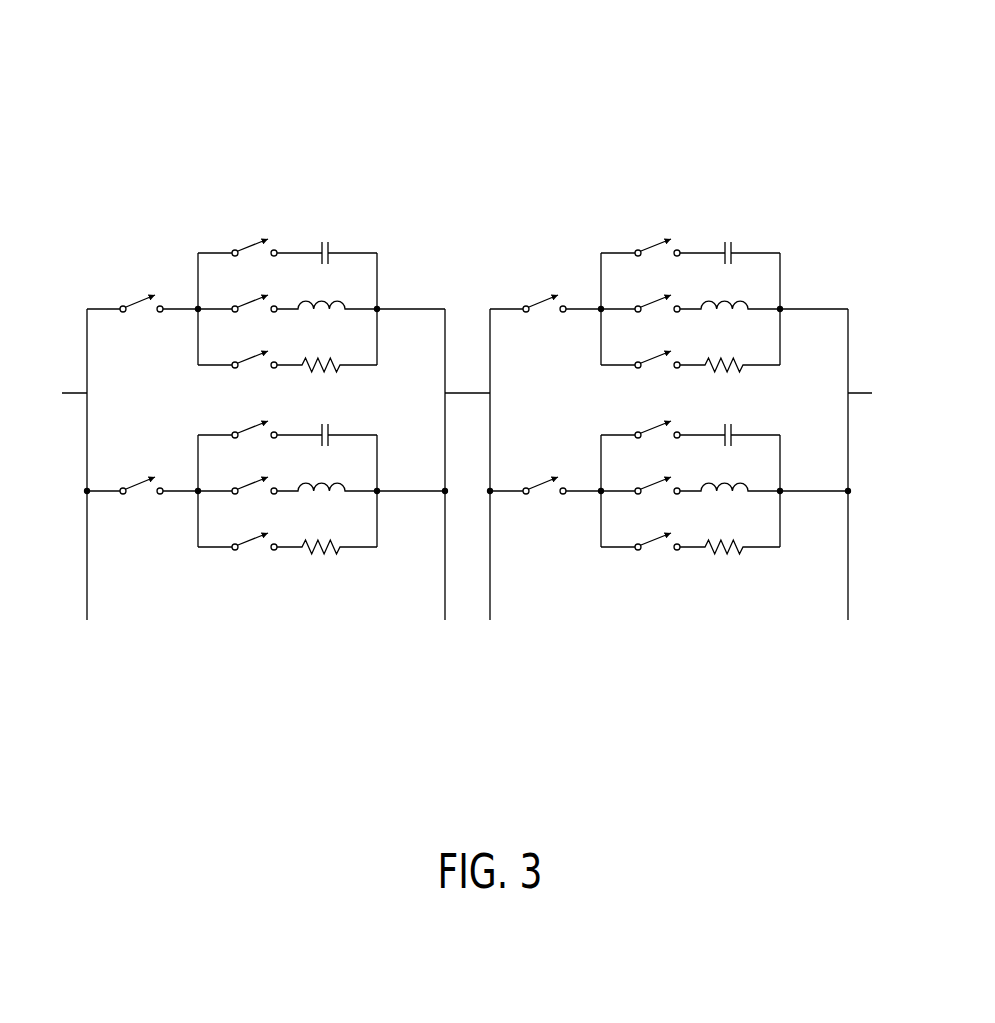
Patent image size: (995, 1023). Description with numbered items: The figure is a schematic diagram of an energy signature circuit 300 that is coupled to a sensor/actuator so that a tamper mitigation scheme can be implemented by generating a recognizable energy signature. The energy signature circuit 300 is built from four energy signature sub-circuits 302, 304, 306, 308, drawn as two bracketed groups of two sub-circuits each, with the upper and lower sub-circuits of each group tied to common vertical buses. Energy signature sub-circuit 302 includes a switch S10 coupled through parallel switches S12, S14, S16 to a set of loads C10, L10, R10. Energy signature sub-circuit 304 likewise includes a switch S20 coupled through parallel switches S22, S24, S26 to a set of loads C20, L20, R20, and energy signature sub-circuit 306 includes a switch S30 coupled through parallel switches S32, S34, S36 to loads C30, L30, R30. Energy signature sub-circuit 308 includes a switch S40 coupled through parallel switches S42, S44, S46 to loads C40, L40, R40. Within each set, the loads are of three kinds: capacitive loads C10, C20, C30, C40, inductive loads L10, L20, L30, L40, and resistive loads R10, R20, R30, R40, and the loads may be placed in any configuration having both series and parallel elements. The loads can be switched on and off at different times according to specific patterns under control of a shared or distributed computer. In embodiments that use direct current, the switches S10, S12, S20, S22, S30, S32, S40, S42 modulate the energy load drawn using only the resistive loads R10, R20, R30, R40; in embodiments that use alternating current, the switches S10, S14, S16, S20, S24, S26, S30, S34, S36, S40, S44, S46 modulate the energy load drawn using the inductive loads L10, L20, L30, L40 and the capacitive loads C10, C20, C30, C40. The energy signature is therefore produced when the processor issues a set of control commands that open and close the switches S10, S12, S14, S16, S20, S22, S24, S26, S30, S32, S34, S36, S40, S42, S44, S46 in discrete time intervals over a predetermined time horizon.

The energy signature circuit 300 is at (184, 138).
The energy signature sub-circuit 302 is at (87, 178).
The energy signature sub-circuit 304 is at (87, 663).
The energy signature sub-circuit 306 is at (490, 178).
The energy signature sub-circuit 308 is at (490, 663).
The switch S10 is at (142, 288).
The switch S12 is at (237, 235).
The switch S14 is at (237, 291).
The switch S16 is at (237, 347).
The switch S20 is at (142, 470).
The switch S22 is at (237, 417).
The switch S24 is at (237, 473).
The switch S26 is at (237, 529).
The switch S30 is at (545, 288).
The switch S32 is at (640, 235).
The switch S34 is at (640, 291).
The switch S36 is at (640, 347).
The switch S40 is at (545, 470).
The switch S42 is at (640, 417).
The switch S44 is at (640, 473).
The switch S46 is at (640, 529).
The capacitive load C10 is at (327, 239).
The capacitive load C20 is at (327, 421).
The capacitive load C30 is at (730, 239).
The capacitive load C40 is at (730, 421).
The inductive load L10 is at (327, 289).
The inductive load L20 is at (327, 471).
The inductive load L30 is at (730, 289).
The inductive load L40 is at (730, 471).
The resistive load R10 is at (327, 349).
The resistive load R20 is at (327, 531).
The resistive load R30 is at (730, 349).
The resistive load R40 is at (730, 531).